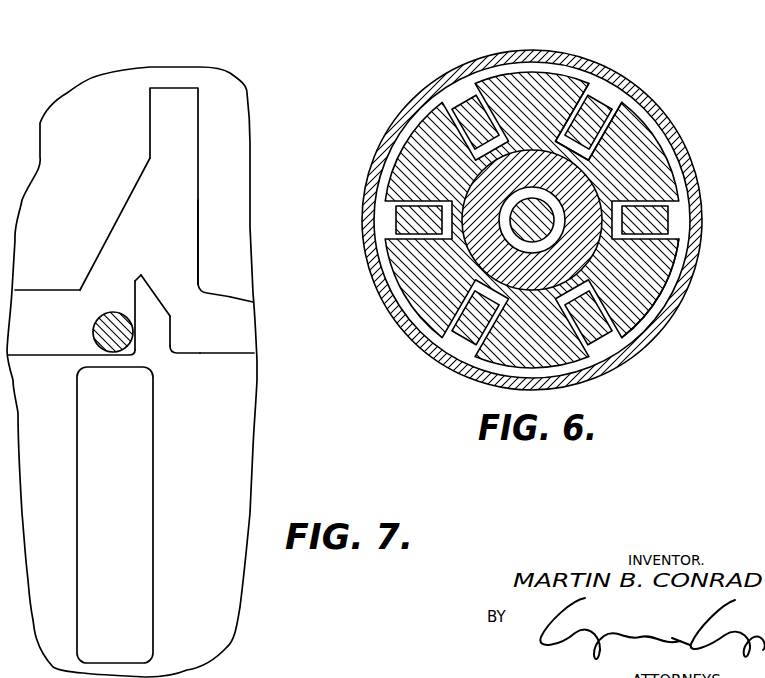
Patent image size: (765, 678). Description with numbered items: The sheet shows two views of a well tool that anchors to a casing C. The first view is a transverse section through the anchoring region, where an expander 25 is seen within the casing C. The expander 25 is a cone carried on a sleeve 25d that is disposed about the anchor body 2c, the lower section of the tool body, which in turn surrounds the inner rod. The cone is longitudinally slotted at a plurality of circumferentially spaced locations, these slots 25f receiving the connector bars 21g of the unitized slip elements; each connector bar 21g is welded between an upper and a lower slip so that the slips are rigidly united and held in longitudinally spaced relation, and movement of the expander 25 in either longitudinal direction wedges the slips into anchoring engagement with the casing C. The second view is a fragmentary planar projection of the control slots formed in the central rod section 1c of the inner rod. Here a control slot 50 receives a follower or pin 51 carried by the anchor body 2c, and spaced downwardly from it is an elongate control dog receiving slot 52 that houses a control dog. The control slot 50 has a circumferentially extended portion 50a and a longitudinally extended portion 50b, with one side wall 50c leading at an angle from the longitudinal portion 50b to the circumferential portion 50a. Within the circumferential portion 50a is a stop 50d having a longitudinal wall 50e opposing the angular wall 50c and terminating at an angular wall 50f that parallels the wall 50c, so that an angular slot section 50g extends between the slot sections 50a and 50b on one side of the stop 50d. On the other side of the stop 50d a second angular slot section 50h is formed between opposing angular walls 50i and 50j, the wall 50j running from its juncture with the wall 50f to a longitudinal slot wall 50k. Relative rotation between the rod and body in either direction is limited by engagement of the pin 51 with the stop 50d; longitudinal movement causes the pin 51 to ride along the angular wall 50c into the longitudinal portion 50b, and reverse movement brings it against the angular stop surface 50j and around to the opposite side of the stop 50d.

In FIG. 6, the casing C is at (422, 100).
In FIG. 6, the expander 25 is at (512, 80).
In FIG. 6, the sleeve 25d is at (617, 253).
In FIG. 6, the longitudinal slot of the cone 25f is at (590, 90).
In FIG. 6, the connector bar 21g is at (597, 107).
In FIG. 6, the anchor body 2c is at (540, 157).
In FIG. 6, the central rod section 1c is at (547, 210).
In FIG. 7, the control slot 50 is at (234, 354).
In FIG. 7, the circumferentially extended portion 50a is at (248, 351).
In FIG. 7, the longitudinally extended portion 50b is at (197, 121).
In FIG. 7, the side wall 50c is at (114, 232).
In FIG. 7, the stop 50d is at (152, 300).
In FIG. 7, the wall 50e is at (135, 298).
In FIG. 7, the angular wall 50f is at (136, 280).
In FIG. 7, the angular slot section 50g is at (112, 250).
In FIG. 7, the angular slot section 50h is at (196, 285).
In FIG. 7, the angular wall 50i is at (253, 301).
In FIG. 7, the angular wall 50j is at (171, 314).
In FIG. 7, the longitudinal slot wall 50k is at (183, 351).
In FIG. 7, the pin 51 is at (98, 337).
In FIG. 7, the control dog receiving slot 52 is at (150, 554).